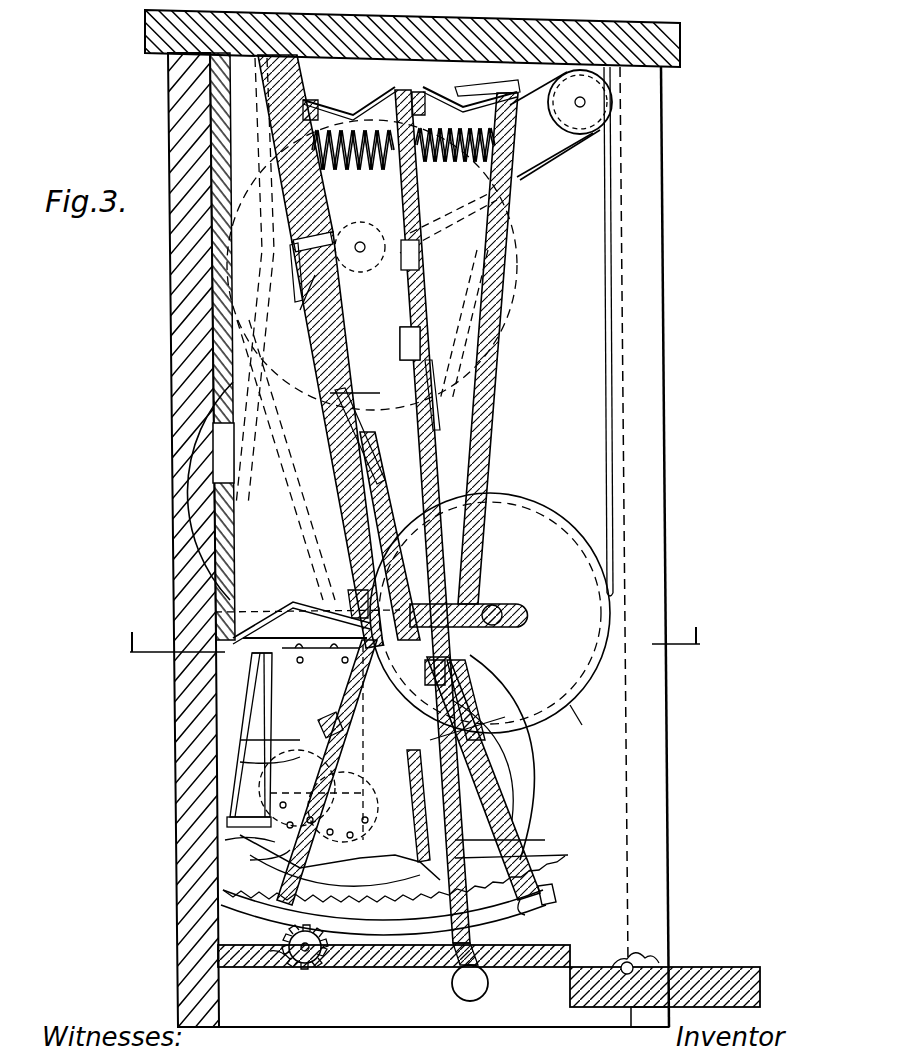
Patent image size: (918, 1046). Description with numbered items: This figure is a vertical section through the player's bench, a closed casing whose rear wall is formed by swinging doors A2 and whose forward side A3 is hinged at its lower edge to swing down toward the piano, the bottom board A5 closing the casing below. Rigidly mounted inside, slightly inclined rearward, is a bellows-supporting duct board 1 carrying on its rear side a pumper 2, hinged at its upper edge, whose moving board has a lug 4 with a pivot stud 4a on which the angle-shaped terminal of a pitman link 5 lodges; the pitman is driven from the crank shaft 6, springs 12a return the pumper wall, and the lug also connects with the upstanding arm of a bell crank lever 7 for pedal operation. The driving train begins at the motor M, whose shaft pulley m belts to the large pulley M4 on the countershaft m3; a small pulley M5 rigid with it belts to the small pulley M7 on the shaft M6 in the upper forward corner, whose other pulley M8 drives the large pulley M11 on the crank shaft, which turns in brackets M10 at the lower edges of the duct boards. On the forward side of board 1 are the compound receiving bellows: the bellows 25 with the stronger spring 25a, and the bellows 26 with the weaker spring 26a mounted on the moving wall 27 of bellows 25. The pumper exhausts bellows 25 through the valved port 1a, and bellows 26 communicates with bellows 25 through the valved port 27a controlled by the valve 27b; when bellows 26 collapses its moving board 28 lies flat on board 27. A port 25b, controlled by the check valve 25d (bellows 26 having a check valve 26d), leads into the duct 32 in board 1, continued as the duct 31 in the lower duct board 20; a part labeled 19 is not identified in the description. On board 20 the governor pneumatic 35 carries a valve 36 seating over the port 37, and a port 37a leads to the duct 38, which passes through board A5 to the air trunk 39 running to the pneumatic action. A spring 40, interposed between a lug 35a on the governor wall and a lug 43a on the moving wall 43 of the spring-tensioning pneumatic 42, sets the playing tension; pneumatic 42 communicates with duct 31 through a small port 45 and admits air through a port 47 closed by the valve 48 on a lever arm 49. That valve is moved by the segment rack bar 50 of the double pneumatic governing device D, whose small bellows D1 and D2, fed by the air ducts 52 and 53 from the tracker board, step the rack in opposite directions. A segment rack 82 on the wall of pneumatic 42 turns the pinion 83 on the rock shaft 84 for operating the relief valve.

The swinging doors A2 is at (390, 523).
The forward side A3 is at (716, 995).
The bottom board A5 is at (412, 967).
The pulley M8 is at (640, 143).
The small pulley M7 is at (597, 148).
The shaft M6 is at (586, 102).
The large pulley M4 is at (476, 337).
The small pulley M5 is at (366, 262).
The brackets M10 is at (520, 628).
The large pulley M11 is at (593, 719).
The motor M is at (520, 793).
The motor shaft pulley m is at (511, 841).
The countershaft m3 is at (420, 258).
The springs 12a is at (252, 440).
The port 25b is at (355, 432).
The lug 4 is at (268, 60).
The duct board 1 is at (345, 345).
The valved port 1a is at (295, 307).
The pin 19 is at (290, 280).
The duct 32 is at (366, 508).
The moving wall 27 is at (430, 483).
The valved port 27a is at (418, 225).
The valve 27b is at (420, 285).
The moving board 28 is at (488, 395).
The check valve 25d is at (368, 412).
The check valve 26d is at (452, 418).
The bellows 25 is at (352, 93).
The bellows 26 is at (448, 105).
The spring 26a is at (482, 140).
The spring 25a is at (350, 170).
The crank shaft 6 is at (496, 606).
The pitman link 5 is at (298, 610).
The pivot stud 4a is at (307, 605).
The pumper 2 is at (312, 592).
The air duct 53 is at (321, 645).
The air duct 52 is at (270, 668).
The small bellows D1 is at (259, 713).
The double pneumatic governing device D is at (295, 770).
The small bellows D2 is at (335, 880).
The lever arm 49 is at (256, 739).
The segment rack bar 50 is at (256, 761).
The port 47 is at (290, 745).
The valve 48 is at (342, 720).
The spring-tensioning pneumatic 42 is at (380, 855).
The moving wall 43 is at (300, 860).
The lug 43a is at (261, 859).
The duct board 20 is at (445, 680).
The duct 31 is at (455, 705).
The port 45 is at (481, 721).
The governor pneumatic 35 is at (470, 752).
The valve 36 is at (512, 762).
The port 37 is at (425, 806).
The port 37a is at (527, 855).
The lug 35a is at (556, 893).
The spring 40 is at (542, 912).
The segment rack 82 is at (270, 905).
The rock shaft 84 is at (310, 962).
The pinion 83 is at (290, 970).
The duct 38 is at (473, 935).
The air trunk 39 is at (488, 983).
The bell crank lever 7 is at (412, 623).